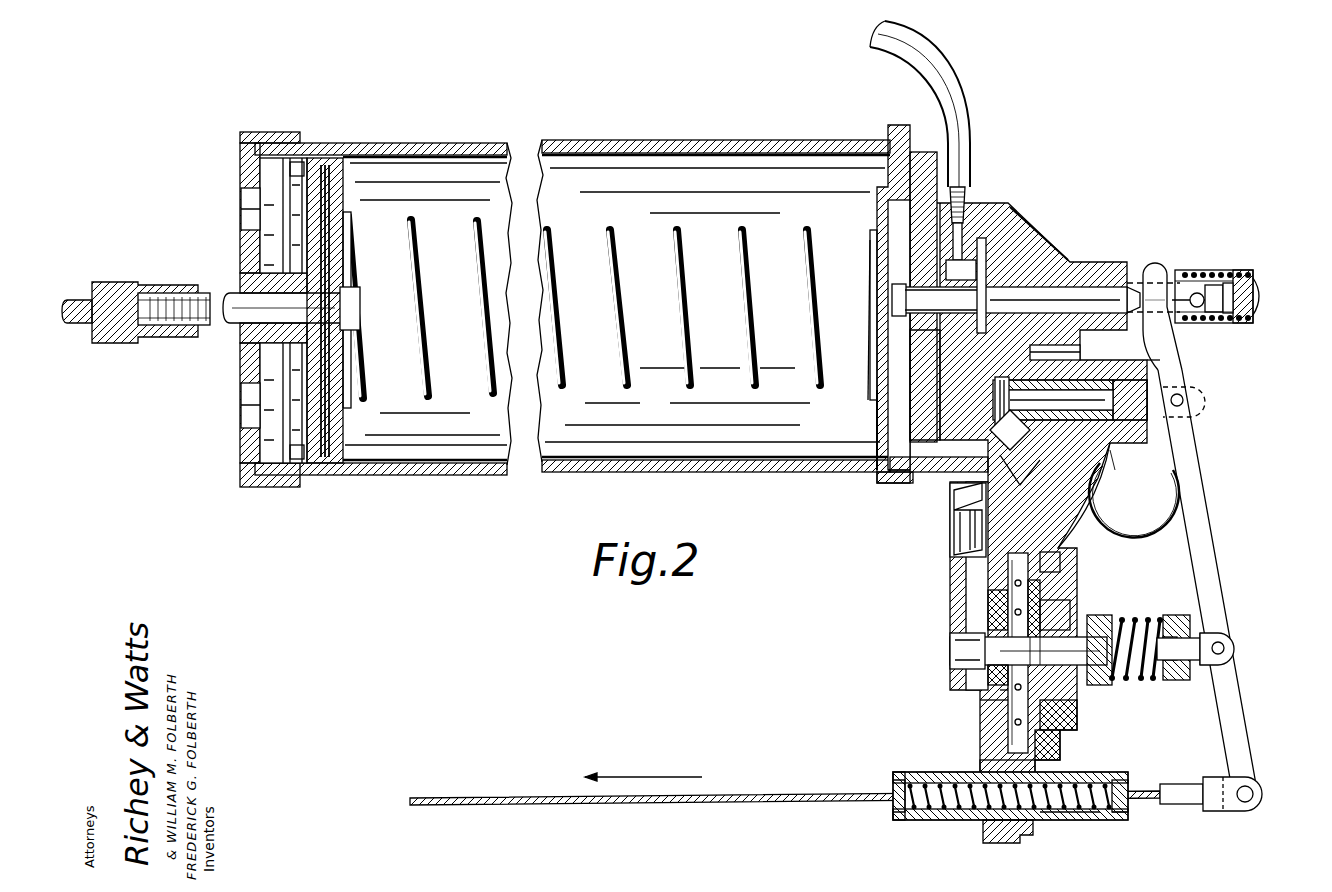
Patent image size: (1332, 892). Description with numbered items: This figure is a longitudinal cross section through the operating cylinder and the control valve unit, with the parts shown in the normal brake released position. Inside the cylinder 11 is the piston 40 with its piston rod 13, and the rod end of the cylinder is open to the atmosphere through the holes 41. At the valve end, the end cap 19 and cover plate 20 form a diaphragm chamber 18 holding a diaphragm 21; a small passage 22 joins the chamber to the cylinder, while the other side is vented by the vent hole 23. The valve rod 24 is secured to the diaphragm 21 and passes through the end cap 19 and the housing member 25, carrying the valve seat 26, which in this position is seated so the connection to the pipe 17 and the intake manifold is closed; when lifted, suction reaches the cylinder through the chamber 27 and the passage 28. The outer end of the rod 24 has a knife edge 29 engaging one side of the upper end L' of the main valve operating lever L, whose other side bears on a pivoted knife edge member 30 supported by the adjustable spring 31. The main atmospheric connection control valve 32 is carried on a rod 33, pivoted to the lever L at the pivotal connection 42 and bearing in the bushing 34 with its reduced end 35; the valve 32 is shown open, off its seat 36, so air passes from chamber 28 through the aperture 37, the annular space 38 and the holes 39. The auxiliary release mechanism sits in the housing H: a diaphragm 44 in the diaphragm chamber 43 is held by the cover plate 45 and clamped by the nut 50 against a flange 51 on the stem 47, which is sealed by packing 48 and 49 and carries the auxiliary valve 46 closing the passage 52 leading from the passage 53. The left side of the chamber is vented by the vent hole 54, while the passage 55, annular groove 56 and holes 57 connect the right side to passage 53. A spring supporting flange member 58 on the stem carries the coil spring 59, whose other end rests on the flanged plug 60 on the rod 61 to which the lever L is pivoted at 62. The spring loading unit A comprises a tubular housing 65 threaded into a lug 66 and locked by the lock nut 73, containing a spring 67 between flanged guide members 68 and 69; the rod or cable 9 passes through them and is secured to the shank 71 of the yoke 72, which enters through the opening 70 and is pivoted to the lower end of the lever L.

The rod or cable 9 is at (673, 803).
The cylinder 11 is at (642, 140).
The piston rod 13 is at (240, 322).
The pipe 17 is at (960, 95).
The diaphragm chamber 18 is at (893, 215).
The end cap 19 is at (925, 150).
The cover plate 20 is at (883, 388).
The diaphragm 21 is at (872, 420).
The passage 22 is at (882, 343).
The vent hole 23 is at (935, 185).
The valve rod 24 is at (1058, 292).
The housing member 25 is at (1010, 212).
The valve seat 26 is at (1030, 252).
The chamber 27 is at (985, 240).
The passage 28 is at (930, 480).
The knife edge 29 is at (1158, 275).
The pivoted knife edge member 30 is at (1200, 292).
The adjustable spring 31 is at (1230, 318).
The main atmospheric connection control valve 32 is at (993, 400).
The rod 33 is at (1115, 443).
The bushing 34 is at (1163, 380).
The reduced end 35 is at (1093, 470).
The seat 36 is at (995, 385).
The aperture 37 is at (962, 427).
The annular space 38 is at (1085, 500).
The holes 39 is at (1042, 362).
The piston 40 is at (333, 455).
The holes 41 is at (250, 198).
The pivotal connection 42 is at (1196, 400).
The diaphragm chamber 43 is at (1025, 603).
The diaphragm 44 is at (1010, 707).
The cover plate 45 is at (1055, 592).
The auxiliary valve 46 is at (975, 650).
The stem 47 is at (1066, 722).
The packing 48 is at (965, 680).
The packing 49 is at (1095, 688).
The nut 50 is at (1062, 740).
The flange 51 is at (985, 612).
The passage 52 is at (958, 640).
The passage 53 is at (968, 568).
The vent hole 54 is at (1000, 725).
The passage 55 is at (955, 540).
The annular groove 56 is at (1060, 548).
The holes 57 is at (1075, 612).
The spring supporting flange member 58 is at (1135, 686).
The coil spring 59 is at (1168, 682).
The flanged plug 60 is at (1188, 638).
The rod 61 is at (1200, 645).
The pivot 62 is at (1226, 648).
The tubular housing 65 is at (962, 820).
The lug 66 is at (1000, 745).
The spring 67 is at (935, 812).
The flanged guide member 68 is at (895, 813).
The flanged guide member 69 is at (1130, 810).
The opening 70 is at (1127, 780).
The shank 71 is at (1196, 804).
The yoke 72 is at (1262, 785).
The lock nut 73 is at (994, 843).
The spring loading unit A is at (1076, 818).
The housing H is at (1055, 560).
The main valve operating lever L is at (1207, 580).
The upper end of lever L' is at (1182, 253).